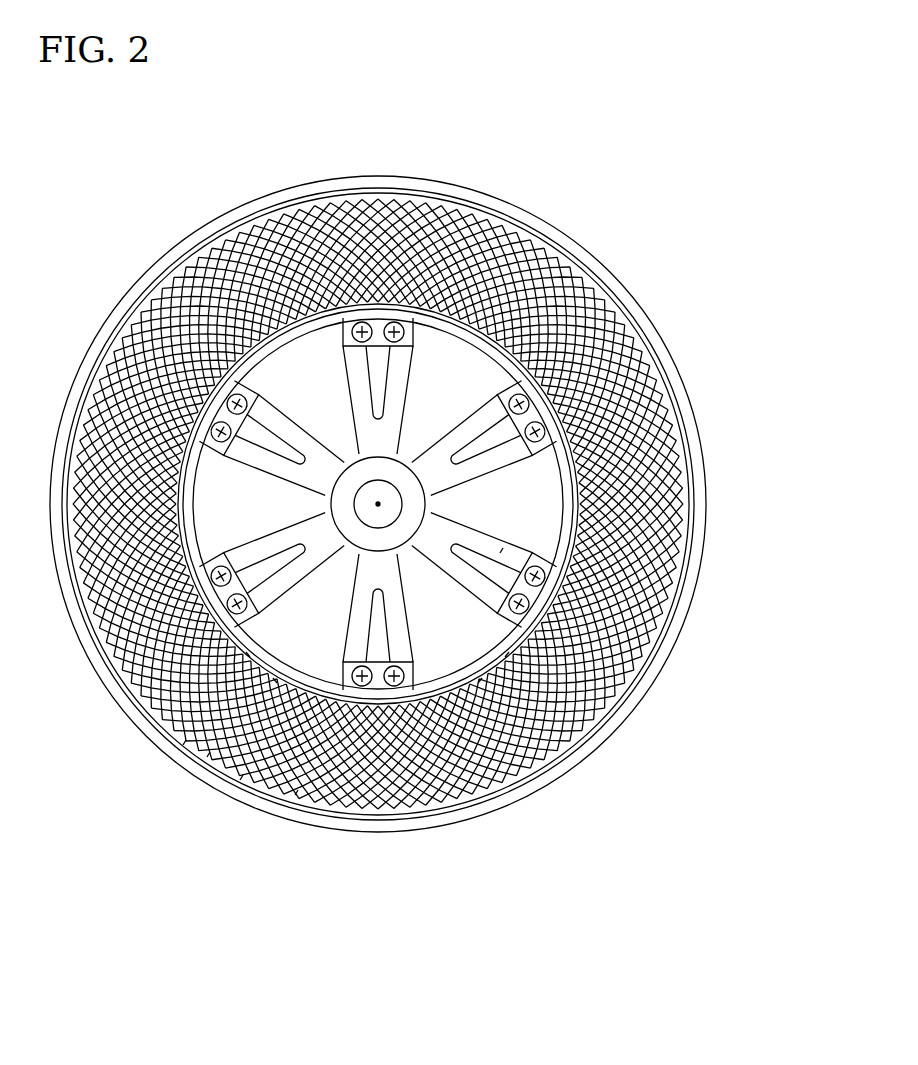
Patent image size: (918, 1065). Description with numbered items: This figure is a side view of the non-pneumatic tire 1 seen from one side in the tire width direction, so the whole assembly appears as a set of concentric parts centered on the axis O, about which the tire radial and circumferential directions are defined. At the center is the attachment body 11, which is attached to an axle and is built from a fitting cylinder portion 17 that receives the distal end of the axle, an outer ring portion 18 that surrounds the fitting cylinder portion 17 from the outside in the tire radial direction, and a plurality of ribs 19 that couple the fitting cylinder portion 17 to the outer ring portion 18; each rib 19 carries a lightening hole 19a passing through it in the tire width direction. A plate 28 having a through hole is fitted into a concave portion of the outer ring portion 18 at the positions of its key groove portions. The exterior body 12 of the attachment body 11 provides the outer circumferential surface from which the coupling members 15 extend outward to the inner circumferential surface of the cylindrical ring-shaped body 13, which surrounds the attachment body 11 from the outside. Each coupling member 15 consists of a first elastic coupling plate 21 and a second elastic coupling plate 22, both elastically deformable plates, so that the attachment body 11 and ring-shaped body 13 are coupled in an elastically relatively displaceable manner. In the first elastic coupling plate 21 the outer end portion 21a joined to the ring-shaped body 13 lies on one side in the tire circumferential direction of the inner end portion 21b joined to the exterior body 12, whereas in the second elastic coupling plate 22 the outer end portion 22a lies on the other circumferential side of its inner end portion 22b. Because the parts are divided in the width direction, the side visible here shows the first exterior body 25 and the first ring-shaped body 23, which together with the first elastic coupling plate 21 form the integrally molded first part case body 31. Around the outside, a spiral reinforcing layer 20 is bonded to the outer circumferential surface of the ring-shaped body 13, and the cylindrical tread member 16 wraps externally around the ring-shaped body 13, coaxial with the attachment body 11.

The non-pneumatic tire 1 is at (672, 108).
The attachment body 11 is at (760, 428).
The exterior body 12 is at (378, 407).
The ring-shaped body 13 is at (378, 462).
The coupling member 15 is at (90, 160).
The tread member 16 is at (378, 176).
The fitting cylinder portion 17 is at (413, 505).
The outer ring portion 18 is at (575, 482).
The rib 19 is at (489, 536).
The lightening hole 19a is at (502, 555).
The spiral reinforcing layer 20 is at (127, 702).
The first elastic coupling plate 21 is at (220, 252).
The outer end portion 21a is at (295, 797).
The inner end portion 21b is at (277, 683).
The second elastic coupling plate 22 is at (190, 278).
The outer end portion 22a is at (207, 757).
The inner end portion 22b is at (478, 683).
The first ring-shaped body 23 is at (527, 231).
The first exterior body 25 is at (430, 305).
The plate 28 is at (588, 383).
The first part case body 31 is at (645, 239).
The axis O is at (378, 504).